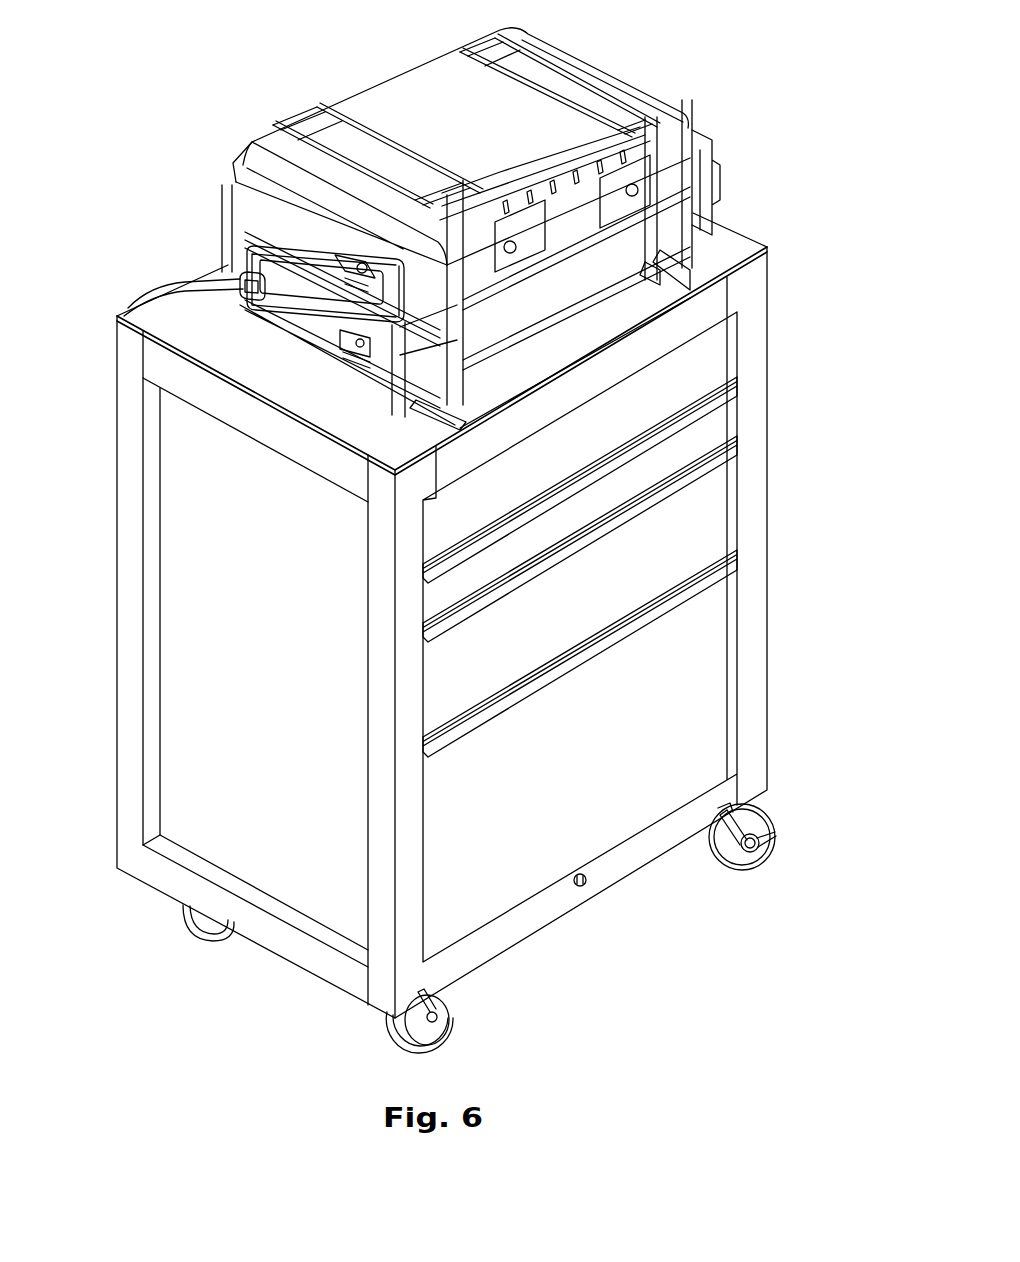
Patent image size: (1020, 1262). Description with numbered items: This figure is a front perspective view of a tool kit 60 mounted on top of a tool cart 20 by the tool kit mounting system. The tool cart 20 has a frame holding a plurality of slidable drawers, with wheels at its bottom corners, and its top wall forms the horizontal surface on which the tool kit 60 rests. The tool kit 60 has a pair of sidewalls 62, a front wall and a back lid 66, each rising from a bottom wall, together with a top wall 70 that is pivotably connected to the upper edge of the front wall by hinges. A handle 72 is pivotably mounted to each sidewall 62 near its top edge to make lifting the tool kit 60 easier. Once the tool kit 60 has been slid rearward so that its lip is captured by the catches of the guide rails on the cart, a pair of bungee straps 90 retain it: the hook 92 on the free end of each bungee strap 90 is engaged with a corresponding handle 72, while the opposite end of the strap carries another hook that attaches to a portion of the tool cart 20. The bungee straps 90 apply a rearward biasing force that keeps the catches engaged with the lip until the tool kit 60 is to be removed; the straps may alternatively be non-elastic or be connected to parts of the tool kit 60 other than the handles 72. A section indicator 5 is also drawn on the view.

The tool cart 20 is at (412, 633).
The tool kit 60 is at (456, 219).
The sidewall 62 is at (275, 208).
The back lid 66 is at (400, 103).
The top wall 70 is at (588, 315).
The handle 72 is at (257, 245).
The bungee strap 90 is at (193, 290).
The hook / buckle 92 is at (278, 300).
The section line indicator for FIG. 5 is at (207, 268).